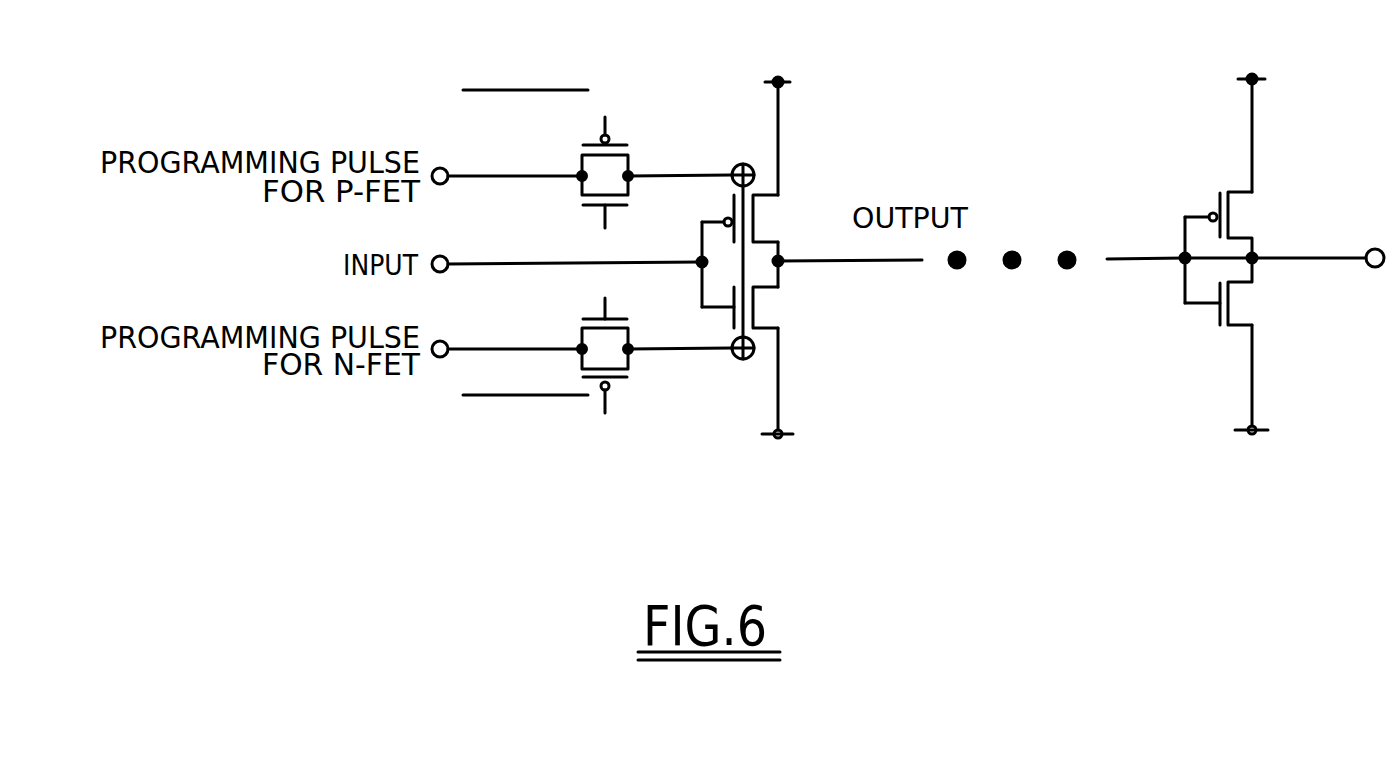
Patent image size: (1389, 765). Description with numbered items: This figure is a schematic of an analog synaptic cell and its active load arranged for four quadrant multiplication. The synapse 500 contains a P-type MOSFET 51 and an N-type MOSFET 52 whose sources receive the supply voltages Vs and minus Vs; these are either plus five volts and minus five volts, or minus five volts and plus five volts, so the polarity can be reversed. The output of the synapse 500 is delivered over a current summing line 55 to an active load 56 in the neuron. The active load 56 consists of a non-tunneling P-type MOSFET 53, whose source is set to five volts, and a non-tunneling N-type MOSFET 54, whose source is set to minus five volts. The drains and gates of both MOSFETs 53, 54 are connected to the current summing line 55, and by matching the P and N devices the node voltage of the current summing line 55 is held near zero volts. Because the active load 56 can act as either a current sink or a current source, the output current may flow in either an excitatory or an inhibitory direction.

The synapse 500 is at (734, 112).
The P-type MOSFET 51 is at (762, 215).
The N-type MOSFET 52 is at (762, 310).
The current summing line 55 is at (893, 260).
The active load 56 is at (1347, 107).
The P-type MOSFET 53 is at (1237, 207).
The N-type MOSFET 54 is at (1238, 308).